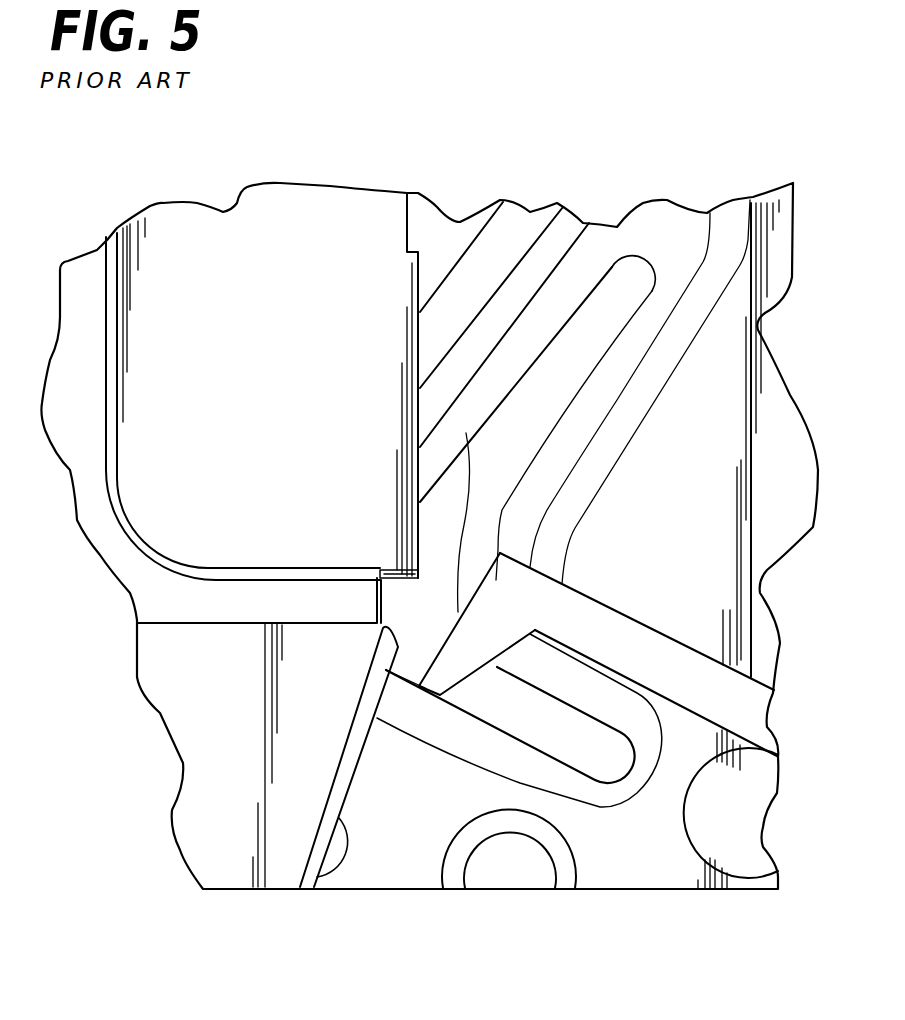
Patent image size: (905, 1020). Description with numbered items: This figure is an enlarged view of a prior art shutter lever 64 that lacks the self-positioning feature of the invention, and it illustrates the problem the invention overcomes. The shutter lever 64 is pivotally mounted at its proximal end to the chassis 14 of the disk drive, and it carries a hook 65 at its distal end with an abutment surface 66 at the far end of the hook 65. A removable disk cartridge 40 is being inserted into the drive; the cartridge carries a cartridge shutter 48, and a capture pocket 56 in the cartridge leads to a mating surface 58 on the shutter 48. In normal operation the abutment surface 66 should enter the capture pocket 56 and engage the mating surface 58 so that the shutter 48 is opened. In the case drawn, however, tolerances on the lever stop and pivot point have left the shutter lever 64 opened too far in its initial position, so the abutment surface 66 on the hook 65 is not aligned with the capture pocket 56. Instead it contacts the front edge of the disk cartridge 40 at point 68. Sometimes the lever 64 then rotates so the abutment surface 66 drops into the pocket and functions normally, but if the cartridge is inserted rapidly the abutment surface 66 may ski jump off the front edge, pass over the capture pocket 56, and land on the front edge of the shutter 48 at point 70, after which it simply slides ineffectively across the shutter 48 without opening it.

The chassis 14 is at (663, 859).
The removable disk cartridge 40 is at (287, 845).
The cartridge shutter 48 is at (213, 492).
The capture pocket 56 is at (417, 607).
The mating surface 58 is at (396, 578).
The shutter lever 64 is at (710, 687).
The hook 65 is at (477, 643).
The abutment surface 66 is at (432, 685).
The point 68 is at (398, 674).
The point 70 is at (420, 543).